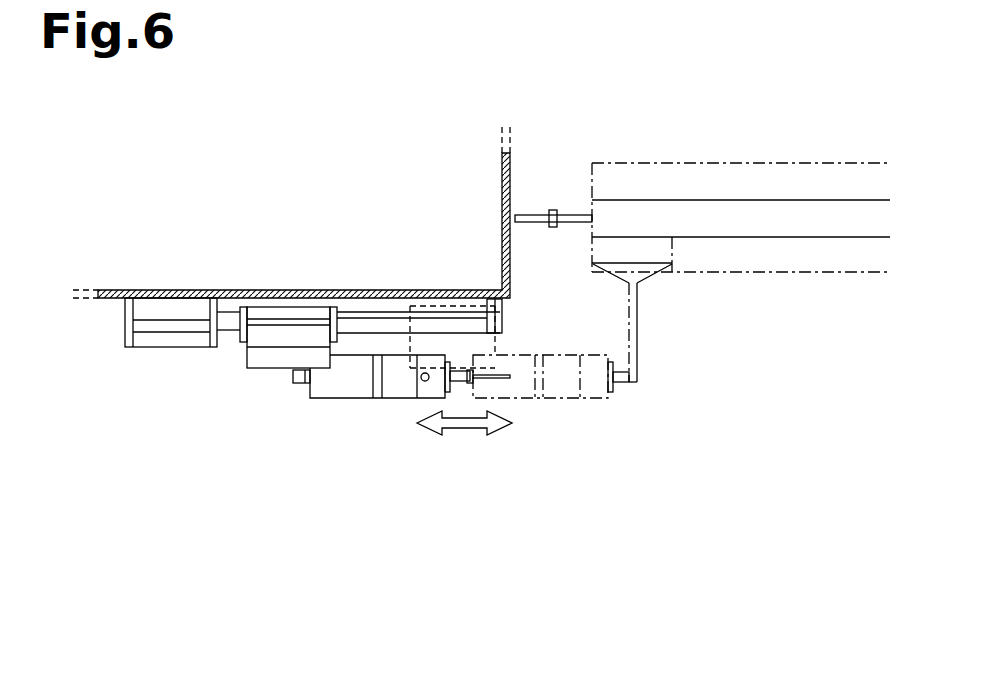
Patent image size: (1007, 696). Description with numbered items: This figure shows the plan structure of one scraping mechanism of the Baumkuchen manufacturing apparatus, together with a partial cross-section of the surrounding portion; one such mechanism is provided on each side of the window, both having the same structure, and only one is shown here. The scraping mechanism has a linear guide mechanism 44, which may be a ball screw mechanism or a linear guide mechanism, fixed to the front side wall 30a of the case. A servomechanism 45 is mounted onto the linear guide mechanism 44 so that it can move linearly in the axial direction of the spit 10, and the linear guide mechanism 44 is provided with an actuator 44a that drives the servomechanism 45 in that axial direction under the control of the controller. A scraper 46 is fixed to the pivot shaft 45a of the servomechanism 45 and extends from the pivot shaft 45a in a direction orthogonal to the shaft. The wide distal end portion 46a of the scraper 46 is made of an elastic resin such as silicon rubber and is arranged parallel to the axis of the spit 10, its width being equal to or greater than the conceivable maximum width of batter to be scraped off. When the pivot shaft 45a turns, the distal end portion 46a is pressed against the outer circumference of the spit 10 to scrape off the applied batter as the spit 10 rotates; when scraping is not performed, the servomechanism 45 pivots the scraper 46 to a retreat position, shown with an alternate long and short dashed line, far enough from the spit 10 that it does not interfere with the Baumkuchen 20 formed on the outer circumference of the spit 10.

The spit 10 is at (795, 224).
The Baumkuchen 20 is at (851, 274).
The front side wall 30a is at (250, 290).
The linear guide mechanism 44 is at (257, 363).
The actuator 44a is at (151, 344).
The servomechanism 45 is at (340, 389).
The pivot shaft 45a is at (462, 372).
The scraper 46 is at (640, 329).
The distal end portion 46a is at (674, 256).